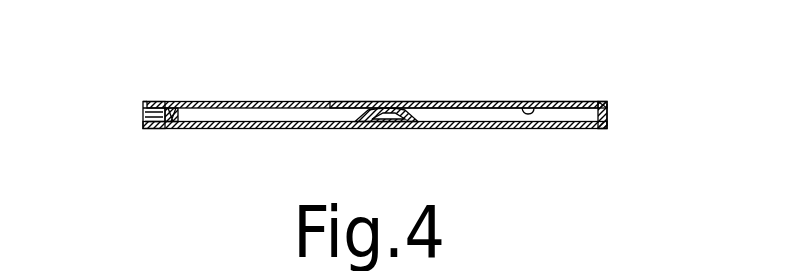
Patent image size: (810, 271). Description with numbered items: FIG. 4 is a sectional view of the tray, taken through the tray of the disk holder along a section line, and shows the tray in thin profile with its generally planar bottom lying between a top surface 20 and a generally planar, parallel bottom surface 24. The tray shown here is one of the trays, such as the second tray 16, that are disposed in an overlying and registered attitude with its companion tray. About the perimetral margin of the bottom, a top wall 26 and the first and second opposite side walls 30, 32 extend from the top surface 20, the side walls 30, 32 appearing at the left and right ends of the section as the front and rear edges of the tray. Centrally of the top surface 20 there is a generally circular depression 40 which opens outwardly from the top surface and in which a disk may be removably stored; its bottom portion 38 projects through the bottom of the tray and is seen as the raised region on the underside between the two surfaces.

The second tray 16 is at (320, 102).
The top surface 20 is at (587, 118).
The bottom surface 24 is at (533, 107).
The top wall 26 is at (460, 102).
The first side wall 30 is at (141, 110).
The second side wall 32 is at (608, 118).
The bottom portion of depression 38 is at (301, 122).
The circular depression 40 is at (230, 102).